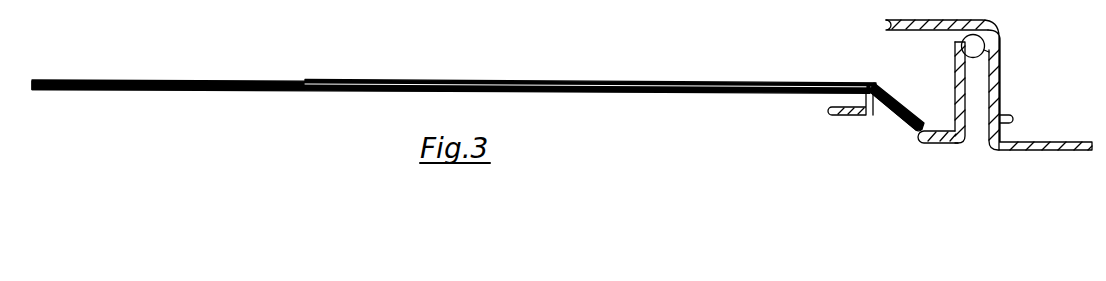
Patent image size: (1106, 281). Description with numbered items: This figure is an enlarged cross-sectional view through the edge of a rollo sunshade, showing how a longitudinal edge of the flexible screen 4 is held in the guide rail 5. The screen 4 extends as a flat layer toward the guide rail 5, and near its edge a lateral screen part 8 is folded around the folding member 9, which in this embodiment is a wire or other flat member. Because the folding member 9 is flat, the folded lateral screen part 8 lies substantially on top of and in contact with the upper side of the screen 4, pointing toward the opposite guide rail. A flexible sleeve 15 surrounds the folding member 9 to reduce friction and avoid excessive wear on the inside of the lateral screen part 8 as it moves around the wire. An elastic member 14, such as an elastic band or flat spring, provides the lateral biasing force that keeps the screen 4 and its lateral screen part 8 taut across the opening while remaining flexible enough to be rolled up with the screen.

The flexible screen 4 is at (299, 90).
The elastic member 14 is at (230, 80).
The lateral screen part 8 is at (572, 82).
The folding member 9 is at (913, 133).
The flexible sleeve 15 is at (924, 143).
The guide rail 5 is at (960, 135).